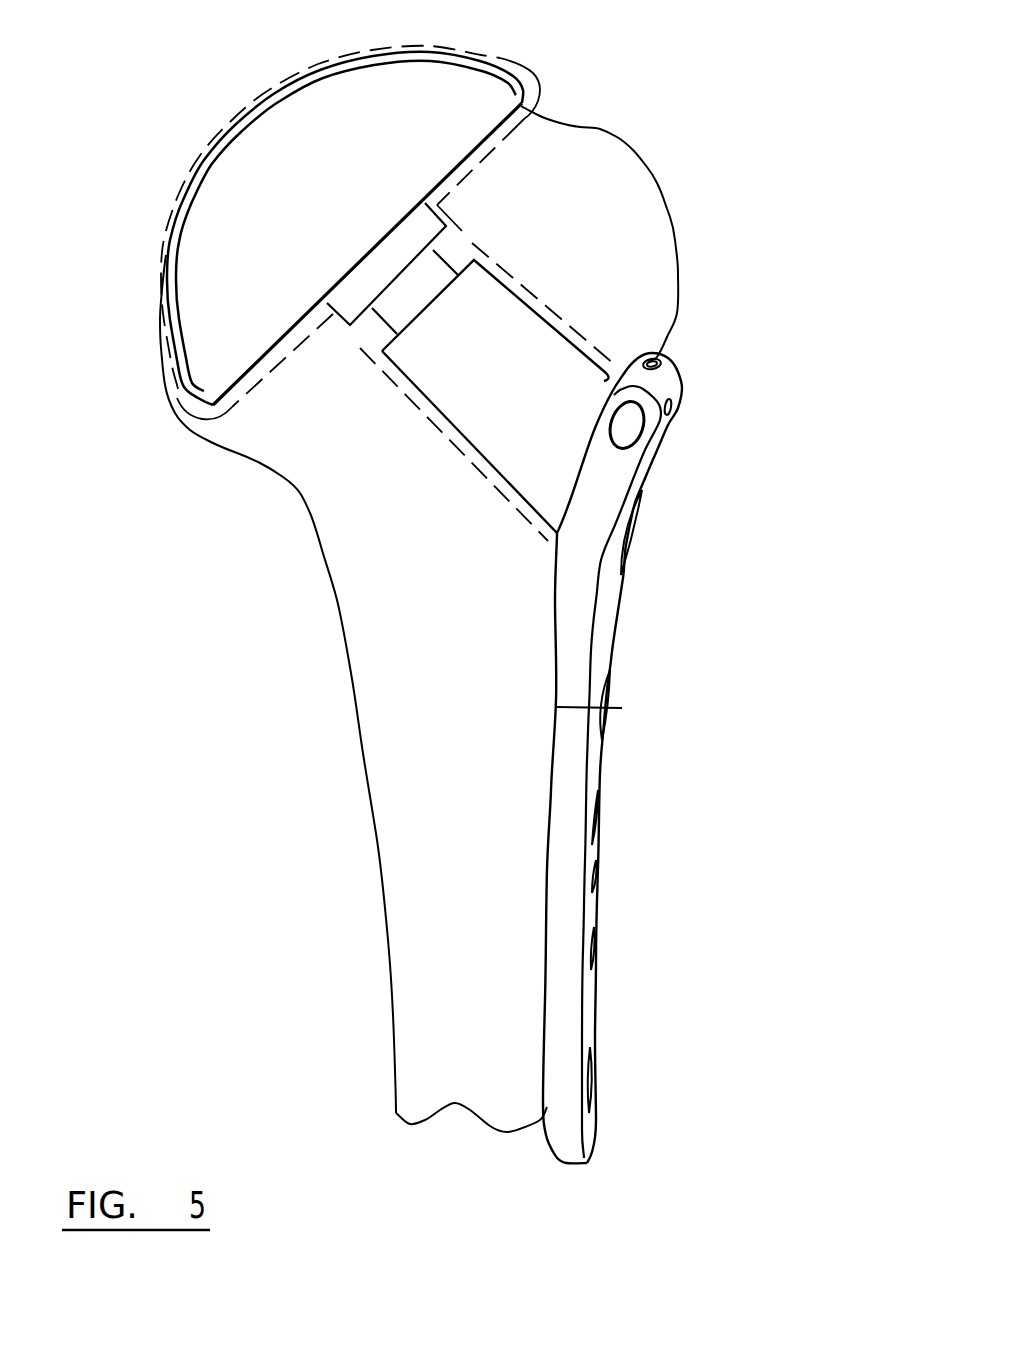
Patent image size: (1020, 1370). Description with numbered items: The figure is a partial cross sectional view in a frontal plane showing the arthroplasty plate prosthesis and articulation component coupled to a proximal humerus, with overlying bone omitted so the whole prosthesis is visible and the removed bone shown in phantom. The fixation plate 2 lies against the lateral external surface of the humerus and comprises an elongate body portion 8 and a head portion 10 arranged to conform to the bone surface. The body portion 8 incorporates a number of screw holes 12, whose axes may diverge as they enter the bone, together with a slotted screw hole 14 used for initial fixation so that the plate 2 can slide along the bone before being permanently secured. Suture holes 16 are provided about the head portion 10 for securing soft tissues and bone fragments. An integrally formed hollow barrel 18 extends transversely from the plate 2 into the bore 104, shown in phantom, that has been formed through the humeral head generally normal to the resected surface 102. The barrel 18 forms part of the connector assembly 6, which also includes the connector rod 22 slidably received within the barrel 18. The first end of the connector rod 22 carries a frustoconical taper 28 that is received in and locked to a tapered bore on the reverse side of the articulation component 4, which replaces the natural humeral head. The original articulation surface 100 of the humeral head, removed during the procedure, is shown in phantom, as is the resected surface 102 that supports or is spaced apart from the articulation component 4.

The articulation surface 100 is at (270, 93).
The resected surface 102 is at (485, 166).
The bore 104 is at (560, 322).
The articulation component 4 is at (265, 207).
The connector rod 22 is at (420, 277).
The connector assembly 6 is at (542, 264).
The frustoconical taper 28 is at (350, 303).
The hollow barrel 18 is at (458, 375).
The fixation plate 2 is at (573, 618).
The suture holes 16 is at (627, 425).
The head portion 10 is at (612, 477).
The elongate body portion 8 is at (593, 903).
The screw holes 12 is at (603, 710).
The slotted screw hole 14 is at (598, 835).